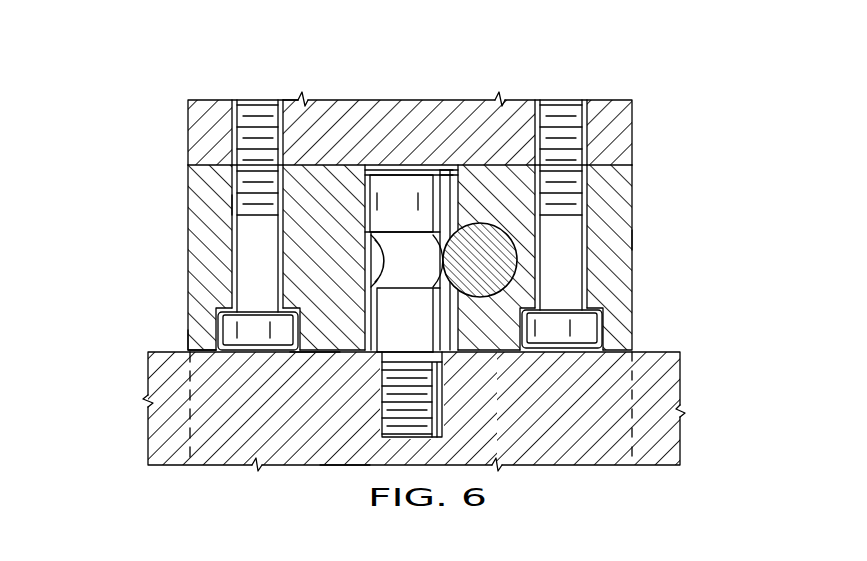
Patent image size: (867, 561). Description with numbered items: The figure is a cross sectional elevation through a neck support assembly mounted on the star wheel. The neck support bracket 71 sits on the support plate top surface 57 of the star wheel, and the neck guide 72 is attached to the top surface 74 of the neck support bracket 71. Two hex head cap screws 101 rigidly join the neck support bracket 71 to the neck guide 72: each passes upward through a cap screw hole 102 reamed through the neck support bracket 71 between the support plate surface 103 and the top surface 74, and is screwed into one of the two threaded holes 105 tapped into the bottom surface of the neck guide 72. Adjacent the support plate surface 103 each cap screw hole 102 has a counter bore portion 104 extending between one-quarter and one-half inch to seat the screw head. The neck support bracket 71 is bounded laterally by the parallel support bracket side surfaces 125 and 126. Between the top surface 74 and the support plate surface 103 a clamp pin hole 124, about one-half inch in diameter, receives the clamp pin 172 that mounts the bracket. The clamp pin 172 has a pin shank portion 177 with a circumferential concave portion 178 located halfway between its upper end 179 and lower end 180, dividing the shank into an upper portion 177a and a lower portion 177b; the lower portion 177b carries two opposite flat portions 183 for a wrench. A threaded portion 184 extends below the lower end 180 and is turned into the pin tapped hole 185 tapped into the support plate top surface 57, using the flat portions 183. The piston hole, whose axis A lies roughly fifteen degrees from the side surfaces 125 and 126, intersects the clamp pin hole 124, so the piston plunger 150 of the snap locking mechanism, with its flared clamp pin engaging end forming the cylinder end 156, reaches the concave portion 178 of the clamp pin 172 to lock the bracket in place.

The support plate top surface 57 is at (192, 346).
The neck support bracket 71 is at (636, 280).
The neck guide 72 is at (636, 120).
The top surface 74 is at (633, 152).
The hex head cap screw 101 is at (363, 217).
The cap screw hole 102 is at (238, 195).
The support plate surface 103 is at (681, 368).
The counter bore portion 104 is at (220, 323).
The threaded hole 105 is at (233, 133).
The clamp pin hole 124 is at (320, 101).
The support bracket side surface 125 is at (233, 203).
The support bracket side surface 126 is at (633, 240).
The piston plunger 150 is at (518, 262).
The cylinder end 156 is at (396, 185).
The clamp pin 172 is at (310, 352).
The pin shank portion 177 is at (383, 243).
The upper portion 177a is at (384, 176).
The lower portion 177b is at (604, 306).
The circumferential concave portion 178 is at (378, 262).
The upper end 179 is at (446, 172).
The lower end 180 is at (447, 356).
The opposite flat portions 183 is at (367, 348).
The threaded portion 184 is at (382, 397).
The pin tapped hole 185 is at (345, 466).
The axis of piston hole A is at (508, 226).